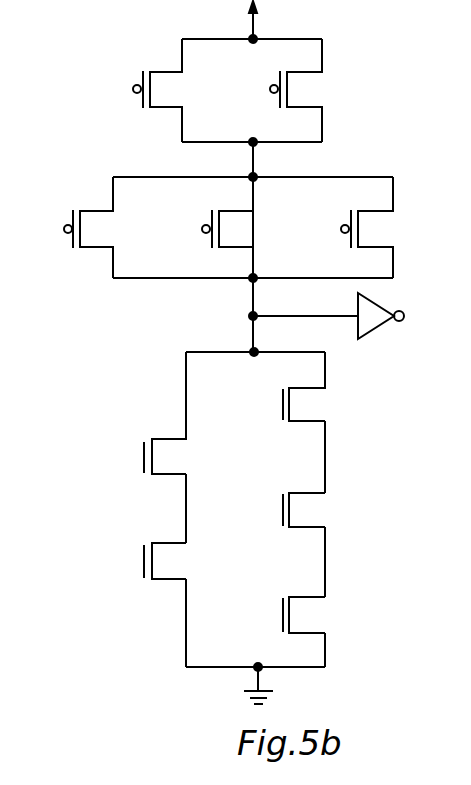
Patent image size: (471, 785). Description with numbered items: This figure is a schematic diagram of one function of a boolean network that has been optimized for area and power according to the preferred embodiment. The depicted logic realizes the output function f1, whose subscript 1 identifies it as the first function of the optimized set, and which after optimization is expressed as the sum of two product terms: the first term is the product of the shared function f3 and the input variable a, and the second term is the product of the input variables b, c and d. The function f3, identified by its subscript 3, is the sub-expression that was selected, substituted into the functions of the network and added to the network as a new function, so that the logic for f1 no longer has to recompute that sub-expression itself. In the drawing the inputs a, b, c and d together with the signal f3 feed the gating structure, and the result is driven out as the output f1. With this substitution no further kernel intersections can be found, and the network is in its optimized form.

The function f3 is at (133, 258).
The f3 signal transistors 3 is at (144, 457).
The input variable a is at (270, 89).
The input variable b is at (64, 229).
The input variable c is at (202, 229).
The input variable d is at (341, 229).
The function f1 is at (350, 316).
The f1 output inverter 1 is at (404, 316).